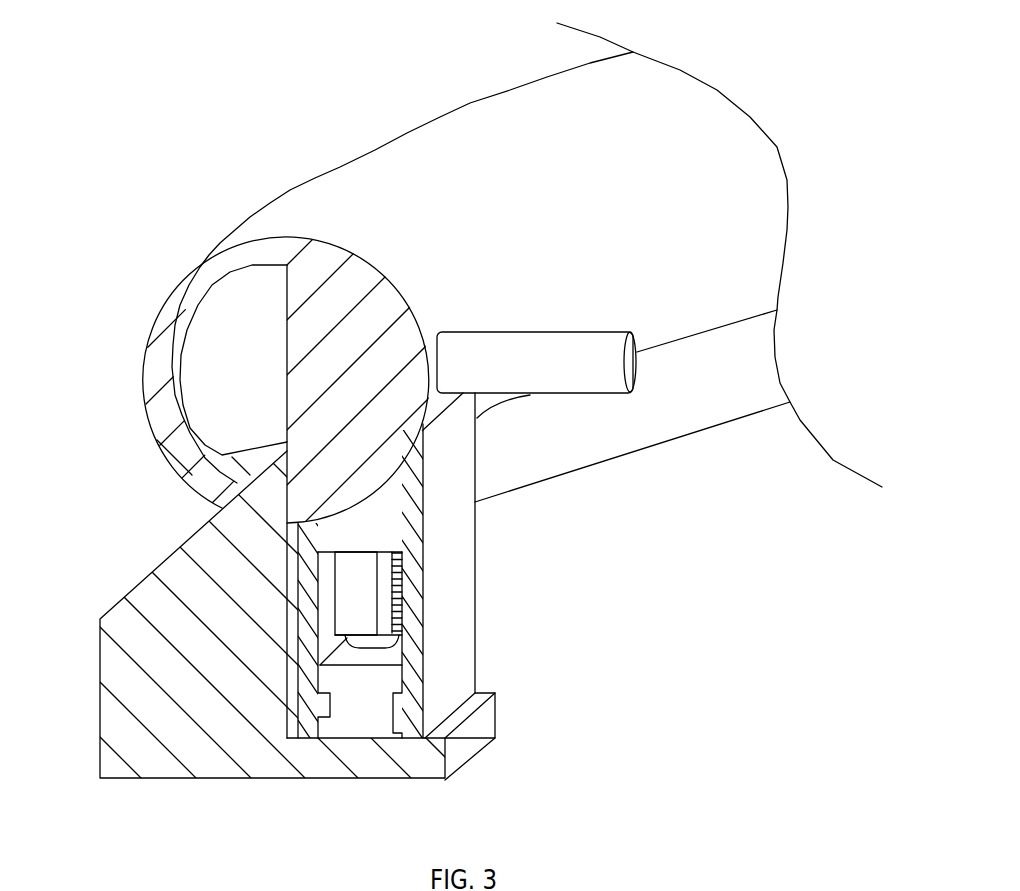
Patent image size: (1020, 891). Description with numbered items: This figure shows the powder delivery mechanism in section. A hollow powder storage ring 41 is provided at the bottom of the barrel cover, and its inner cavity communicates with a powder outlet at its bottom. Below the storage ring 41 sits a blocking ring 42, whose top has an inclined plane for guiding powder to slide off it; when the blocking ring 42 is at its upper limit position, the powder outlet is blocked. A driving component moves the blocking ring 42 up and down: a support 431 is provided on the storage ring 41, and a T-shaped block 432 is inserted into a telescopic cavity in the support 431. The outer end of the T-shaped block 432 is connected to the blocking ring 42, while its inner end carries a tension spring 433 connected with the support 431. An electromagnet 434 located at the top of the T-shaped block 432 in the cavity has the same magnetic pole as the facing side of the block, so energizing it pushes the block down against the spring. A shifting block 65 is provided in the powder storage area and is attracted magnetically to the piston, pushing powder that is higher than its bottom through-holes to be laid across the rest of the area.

The hollow powder storage ring 41 is at (505, 155).
The blocking ring 42 is at (180, 622).
The shifting block 65 is at (240, 352).
The support 431 is at (453, 535).
The T-shaped block 432 is at (365, 690).
The tension spring 433 is at (395, 578).
The electromagnet 434 is at (355, 607).